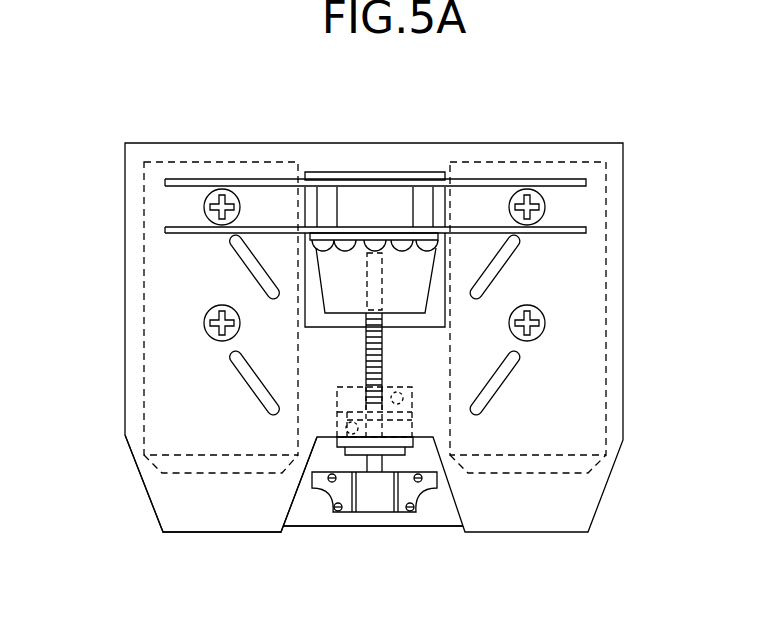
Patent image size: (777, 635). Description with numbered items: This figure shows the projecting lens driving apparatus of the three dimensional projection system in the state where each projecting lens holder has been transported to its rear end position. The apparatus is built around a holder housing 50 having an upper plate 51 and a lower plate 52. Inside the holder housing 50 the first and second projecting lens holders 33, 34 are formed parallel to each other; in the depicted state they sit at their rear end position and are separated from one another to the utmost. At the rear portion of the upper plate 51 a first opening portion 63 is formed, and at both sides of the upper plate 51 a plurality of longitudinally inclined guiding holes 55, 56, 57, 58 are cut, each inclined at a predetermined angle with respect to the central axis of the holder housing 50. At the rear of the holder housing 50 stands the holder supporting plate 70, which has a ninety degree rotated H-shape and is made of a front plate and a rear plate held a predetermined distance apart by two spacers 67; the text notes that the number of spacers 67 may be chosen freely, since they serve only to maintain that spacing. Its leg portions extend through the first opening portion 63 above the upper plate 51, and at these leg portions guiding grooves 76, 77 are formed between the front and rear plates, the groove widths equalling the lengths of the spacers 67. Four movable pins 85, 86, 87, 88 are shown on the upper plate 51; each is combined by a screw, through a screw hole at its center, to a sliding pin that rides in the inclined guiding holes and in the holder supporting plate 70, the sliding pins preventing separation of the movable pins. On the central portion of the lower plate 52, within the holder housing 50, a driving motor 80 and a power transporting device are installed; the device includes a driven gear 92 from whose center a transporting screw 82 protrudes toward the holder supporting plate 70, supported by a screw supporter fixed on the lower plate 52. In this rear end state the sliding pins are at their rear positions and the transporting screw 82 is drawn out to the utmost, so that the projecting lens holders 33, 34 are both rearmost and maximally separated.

The holder housing 50 is at (112, 427).
The upper plate 51 is at (160, 518).
The lower plate 52 is at (307, 515).
The first projecting lens holder 33 is at (143, 468).
The second projecting lens holder 34 is at (612, 478).
The first opening portion 63 is at (437, 312).
The holder supporting plate 70 is at (347, 164).
The spacers 67 is at (332, 218).
The guiding groove 76 is at (267, 207).
The guiding groove 77 is at (500, 207).
The movable pin 85 is at (204, 207).
The movable pin 86 is at (545, 207).
The movable pin 87 is at (204, 323).
The movable pin 88 is at (545, 323).
The longitudinally inclined guiding hole 55 is at (243, 258).
The longitudinally inclined guiding hole 56 is at (505, 262).
The longitudinally inclined guiding hole 57 is at (245, 372).
The longitudinally inclined guiding hole 58 is at (505, 377).
The transporting screw 82 is at (367, 368).
The driven gear 92 is at (413, 447).
The driving motor 80 is at (373, 508).